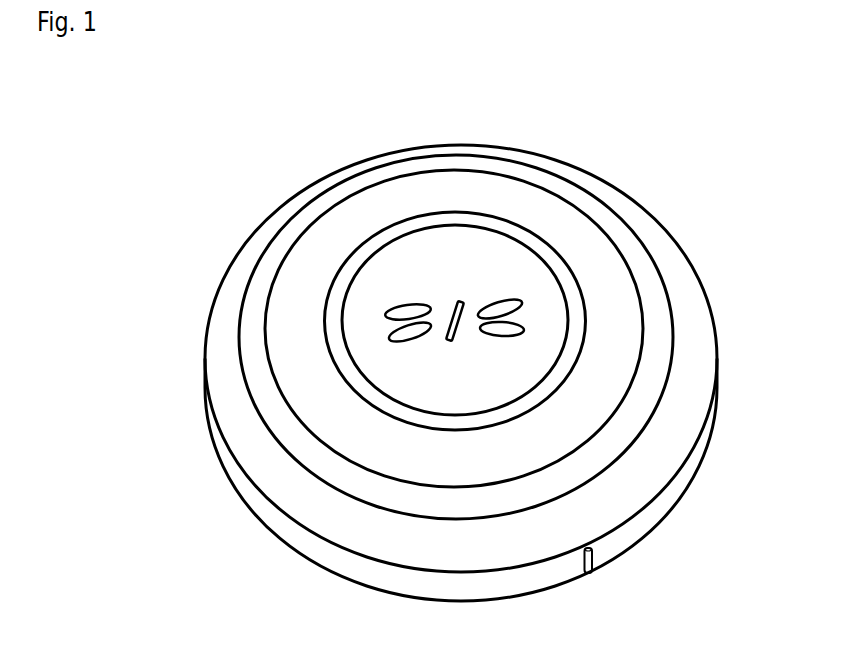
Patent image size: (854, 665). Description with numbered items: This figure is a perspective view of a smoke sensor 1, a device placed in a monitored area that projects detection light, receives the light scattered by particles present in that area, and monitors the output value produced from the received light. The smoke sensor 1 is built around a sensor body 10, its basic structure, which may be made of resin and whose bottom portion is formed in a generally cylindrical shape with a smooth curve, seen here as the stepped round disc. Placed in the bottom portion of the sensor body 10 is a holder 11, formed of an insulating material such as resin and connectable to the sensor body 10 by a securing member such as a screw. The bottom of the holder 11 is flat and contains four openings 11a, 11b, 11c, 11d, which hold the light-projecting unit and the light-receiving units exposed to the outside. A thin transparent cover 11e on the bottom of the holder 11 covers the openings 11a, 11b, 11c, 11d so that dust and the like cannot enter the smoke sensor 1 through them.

The smoke sensor 1 is at (192, 143).
The sensor body 10 is at (340, 170).
The holder 11 is at (508, 203).
The opening 11a is at (405, 340).
The opening 11b is at (508, 295).
The opening 11c is at (508, 342).
The opening 11d is at (407, 303).
The transparent cover 11e is at (425, 272).